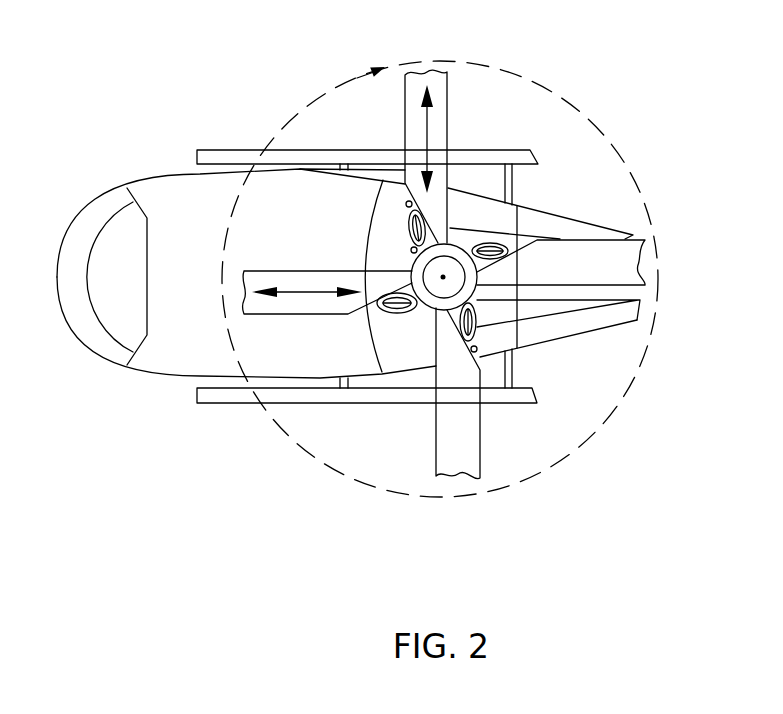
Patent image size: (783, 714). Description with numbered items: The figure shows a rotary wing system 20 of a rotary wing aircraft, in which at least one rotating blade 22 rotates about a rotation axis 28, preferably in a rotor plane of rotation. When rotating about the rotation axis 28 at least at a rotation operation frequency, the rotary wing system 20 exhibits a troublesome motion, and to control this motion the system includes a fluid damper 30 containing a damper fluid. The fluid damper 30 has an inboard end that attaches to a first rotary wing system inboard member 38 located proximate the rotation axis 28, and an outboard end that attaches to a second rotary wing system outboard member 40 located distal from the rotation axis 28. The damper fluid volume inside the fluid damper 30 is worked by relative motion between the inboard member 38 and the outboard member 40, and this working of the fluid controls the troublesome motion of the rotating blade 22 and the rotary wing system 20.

The rotary wing system 20 is at (458, 510).
The rotating blade 22 is at (470, 423).
The rotation axis 28 is at (443, 280).
The fluid damper 30 is at (390, 216).
The first rotary wing system inboard member 38 is at (392, 252).
The second rotary wing system outboard member 40 is at (400, 182).